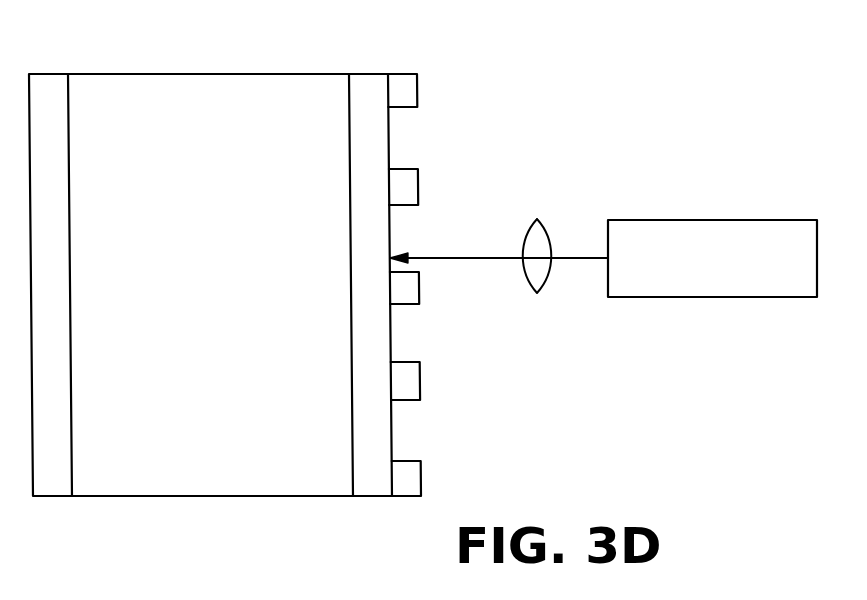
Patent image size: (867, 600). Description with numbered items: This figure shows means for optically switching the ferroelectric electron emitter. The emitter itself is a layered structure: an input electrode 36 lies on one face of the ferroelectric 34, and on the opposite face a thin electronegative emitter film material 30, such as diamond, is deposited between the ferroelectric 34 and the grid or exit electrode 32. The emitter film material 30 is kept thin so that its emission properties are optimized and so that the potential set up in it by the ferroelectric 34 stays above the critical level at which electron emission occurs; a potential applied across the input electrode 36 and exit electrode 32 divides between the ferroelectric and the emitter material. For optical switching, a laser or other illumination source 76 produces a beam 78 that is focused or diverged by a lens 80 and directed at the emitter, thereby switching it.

The electronegative emitter film material 30 is at (378, 73).
The grid or exit electrode 32 is at (419, 93).
The ferroelectric 34 is at (255, 73).
The input electrode 36 is at (55, 74).
The laser or other illumination source 76 is at (712, 220).
The beam 78 is at (575, 260).
The lens 80 is at (541, 222).